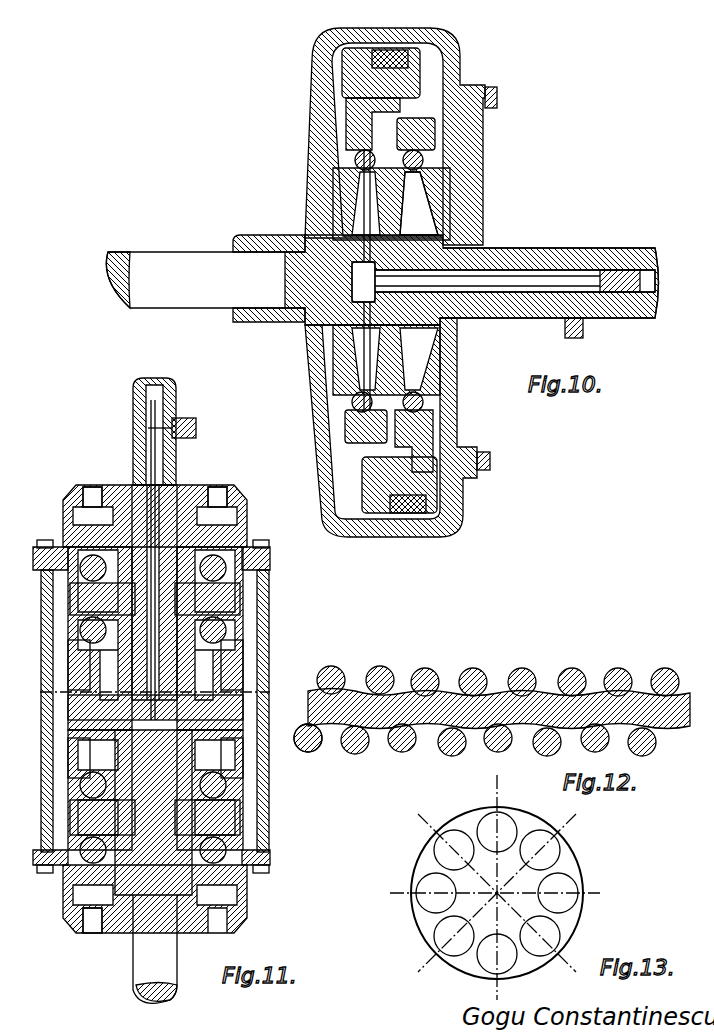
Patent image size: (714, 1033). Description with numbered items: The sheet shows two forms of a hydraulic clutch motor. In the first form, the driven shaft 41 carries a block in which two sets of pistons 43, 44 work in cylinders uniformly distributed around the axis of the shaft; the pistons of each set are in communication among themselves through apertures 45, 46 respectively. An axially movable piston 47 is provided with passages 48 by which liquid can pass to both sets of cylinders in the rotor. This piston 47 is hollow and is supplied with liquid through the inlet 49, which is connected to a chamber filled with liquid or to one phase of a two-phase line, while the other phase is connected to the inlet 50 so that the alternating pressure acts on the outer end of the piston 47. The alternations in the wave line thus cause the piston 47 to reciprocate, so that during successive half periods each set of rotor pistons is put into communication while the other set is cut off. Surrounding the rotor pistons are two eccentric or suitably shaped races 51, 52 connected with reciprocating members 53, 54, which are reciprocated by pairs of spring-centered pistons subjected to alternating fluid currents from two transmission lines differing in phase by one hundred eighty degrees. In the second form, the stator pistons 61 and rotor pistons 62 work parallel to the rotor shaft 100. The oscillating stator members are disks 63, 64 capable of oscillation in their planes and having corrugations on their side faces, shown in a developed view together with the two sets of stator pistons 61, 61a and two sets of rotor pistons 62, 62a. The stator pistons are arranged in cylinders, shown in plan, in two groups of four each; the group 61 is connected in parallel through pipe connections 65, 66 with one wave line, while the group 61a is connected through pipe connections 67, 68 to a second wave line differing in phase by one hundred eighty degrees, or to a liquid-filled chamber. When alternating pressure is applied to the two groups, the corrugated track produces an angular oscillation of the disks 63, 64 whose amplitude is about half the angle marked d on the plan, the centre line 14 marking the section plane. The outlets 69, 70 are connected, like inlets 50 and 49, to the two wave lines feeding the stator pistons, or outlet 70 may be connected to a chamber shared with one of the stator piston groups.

In FIG. 10, the driven shaft 41 is at (214, 296).
In FIG. 10, the pistons 43 is at (350, 185).
In FIG. 10, the pistons 44 is at (430, 197).
In FIG. 10, the aperture 45 is at (325, 250).
In FIG. 10, the aperture 46 is at (443, 250).
In FIG. 10, the piston 47 is at (396, 262).
In FIG. 11, the piston 47 is at (165, 468).
In FIG. 10, the passages 48 is at (363, 282).
In FIG. 10, the inlet 49 is at (583, 332).
In FIG. 10, the inlet 50 is at (645, 280).
In FIG. 10, the race 51 is at (346, 103).
In FIG. 10, the race 52 is at (435, 138).
In FIG. 10, the reciprocating member 53 is at (342, 54).
In FIG. 10, the reciprocating member 54 is at (398, 510).
In FIG. 11, the stator pistons 61 is at (68, 533).
In FIG. 12, the stator pistons 61 is at (330, 676).
In FIG. 13, the stator pistons 61 is at (497, 877).
In FIG. 12, the stator pistons 61a is at (382, 676).
In FIG. 13, the stator pistons 61a is at (445, 808).
In FIG. 11, the rotor pistons 62 is at (78, 648).
In FIG. 12, the rotor pistons 62 is at (310, 752).
In FIG. 12, the rotor pistons 62a is at (358, 752).
In FIG. 11, the disk 63 is at (80, 595).
In FIG. 11, the disk 64 is at (82, 810).
In FIG. 11, the pipe connection 65 is at (93, 490).
In FIG. 11, the pipe connection 66 is at (93, 927).
In FIG. 11, the pipe connection 67 is at (218, 490).
In FIG. 11, the pipe connection 68 is at (185, 735).
In FIG. 11, the outlet 69 is at (155, 385).
In FIG. 11, the outlet 70 is at (196, 430).
In FIG. 11, the center plane 14 is at (40, 692).
In FIG. 11, the rotor shaft 100 is at (152, 958).
In FIG. 13, the diameter d is at (489, 799).